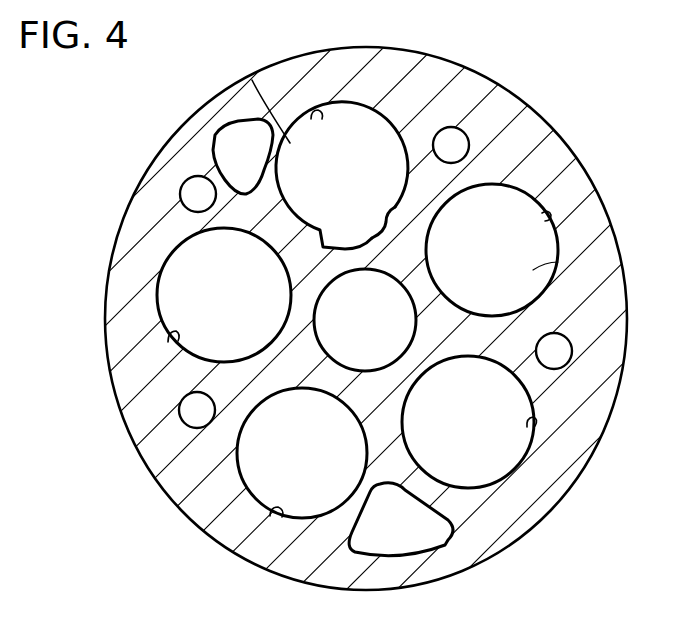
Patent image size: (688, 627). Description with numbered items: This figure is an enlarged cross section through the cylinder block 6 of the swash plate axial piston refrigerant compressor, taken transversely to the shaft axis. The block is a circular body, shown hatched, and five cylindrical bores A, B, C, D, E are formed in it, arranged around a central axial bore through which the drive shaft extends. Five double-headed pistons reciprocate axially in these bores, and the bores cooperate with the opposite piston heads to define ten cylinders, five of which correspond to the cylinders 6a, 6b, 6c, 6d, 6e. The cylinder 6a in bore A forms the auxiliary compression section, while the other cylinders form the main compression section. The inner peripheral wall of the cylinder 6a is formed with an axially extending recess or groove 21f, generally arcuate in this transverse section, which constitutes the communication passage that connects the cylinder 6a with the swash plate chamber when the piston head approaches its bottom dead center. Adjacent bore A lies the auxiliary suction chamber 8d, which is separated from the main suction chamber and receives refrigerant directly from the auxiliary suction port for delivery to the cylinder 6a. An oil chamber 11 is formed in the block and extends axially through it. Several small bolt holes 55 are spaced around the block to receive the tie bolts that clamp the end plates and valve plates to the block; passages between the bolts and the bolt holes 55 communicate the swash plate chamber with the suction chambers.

The cylinder block 6 is at (467, 93).
The cylinder 6a is at (252, 80).
The cylinder 6b is at (173, 293).
The cylinder 6c is at (265, 490).
The cylinder 6d is at (510, 448).
The cylinder 6e is at (558, 262).
The auxiliary suction chamber 8d is at (215, 140).
The oil chamber 11 is at (428, 537).
The groove 21f is at (392, 216).
The bolt holes 55 is at (180, 192).
The cylindrical bore A is at (313, 117).
The cylindrical bore B is at (167, 341).
The cylindrical bore C is at (280, 516).
The cylindrical bore D is at (533, 425).
The cylindrical bore E is at (550, 215).